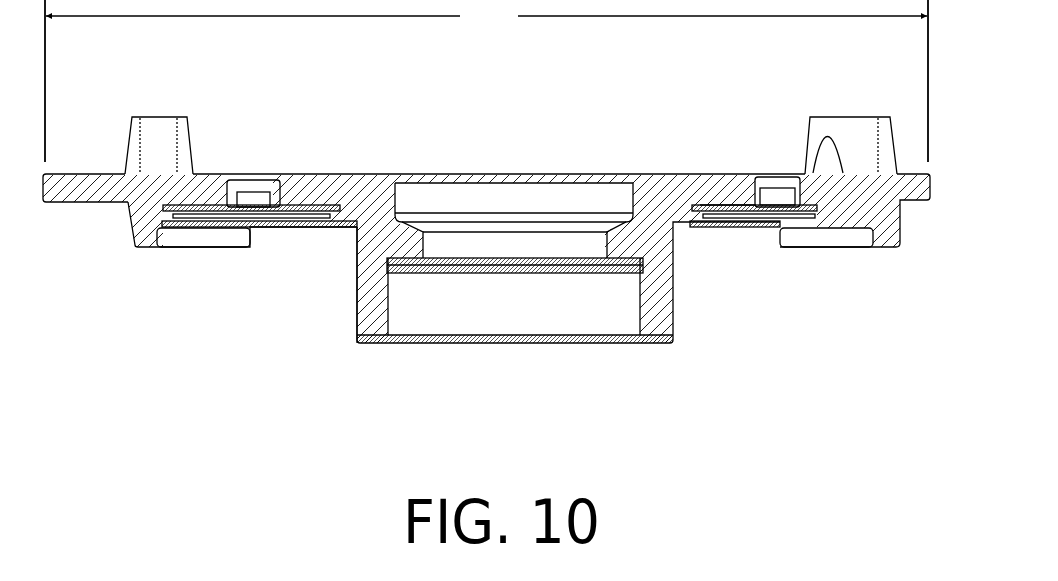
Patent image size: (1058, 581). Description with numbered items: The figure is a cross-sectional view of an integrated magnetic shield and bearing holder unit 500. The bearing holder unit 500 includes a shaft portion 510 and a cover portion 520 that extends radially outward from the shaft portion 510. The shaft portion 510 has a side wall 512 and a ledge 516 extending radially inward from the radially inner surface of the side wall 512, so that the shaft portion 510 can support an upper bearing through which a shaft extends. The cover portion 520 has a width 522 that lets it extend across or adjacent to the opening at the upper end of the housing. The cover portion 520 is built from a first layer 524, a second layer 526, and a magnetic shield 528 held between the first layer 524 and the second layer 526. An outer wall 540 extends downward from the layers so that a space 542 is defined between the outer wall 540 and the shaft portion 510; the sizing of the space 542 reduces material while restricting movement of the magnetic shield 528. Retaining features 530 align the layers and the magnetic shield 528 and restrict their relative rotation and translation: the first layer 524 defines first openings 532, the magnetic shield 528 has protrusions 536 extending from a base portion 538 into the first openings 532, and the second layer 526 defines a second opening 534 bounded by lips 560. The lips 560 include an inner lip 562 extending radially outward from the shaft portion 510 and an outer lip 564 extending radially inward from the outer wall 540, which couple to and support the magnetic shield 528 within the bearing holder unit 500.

The bearing holder unit 500 is at (296, 428).
The shaft portion 510 is at (492, 141).
The side wall 512 is at (672, 326).
The ledge 516 is at (430, 246).
The cover portion 520 is at (205, 167).
The width 522 is at (486, 81).
The first layer 524 is at (855, 194).
The second layer 526 is at (878, 223).
The magnetic shield 528 is at (757, 213).
The features 530 is at (257, 167).
The first openings 532 is at (772, 182).
The second opening 534 is at (800, 232).
The protrusions 536 is at (756, 178).
The base portion 538 is at (320, 197).
The outer wall 540 is at (147, 252).
The space 542 is at (300, 259).
The lips 560 is at (186, 231).
The inner lip 562 is at (328, 230).
The outer lip 564 is at (168, 228).